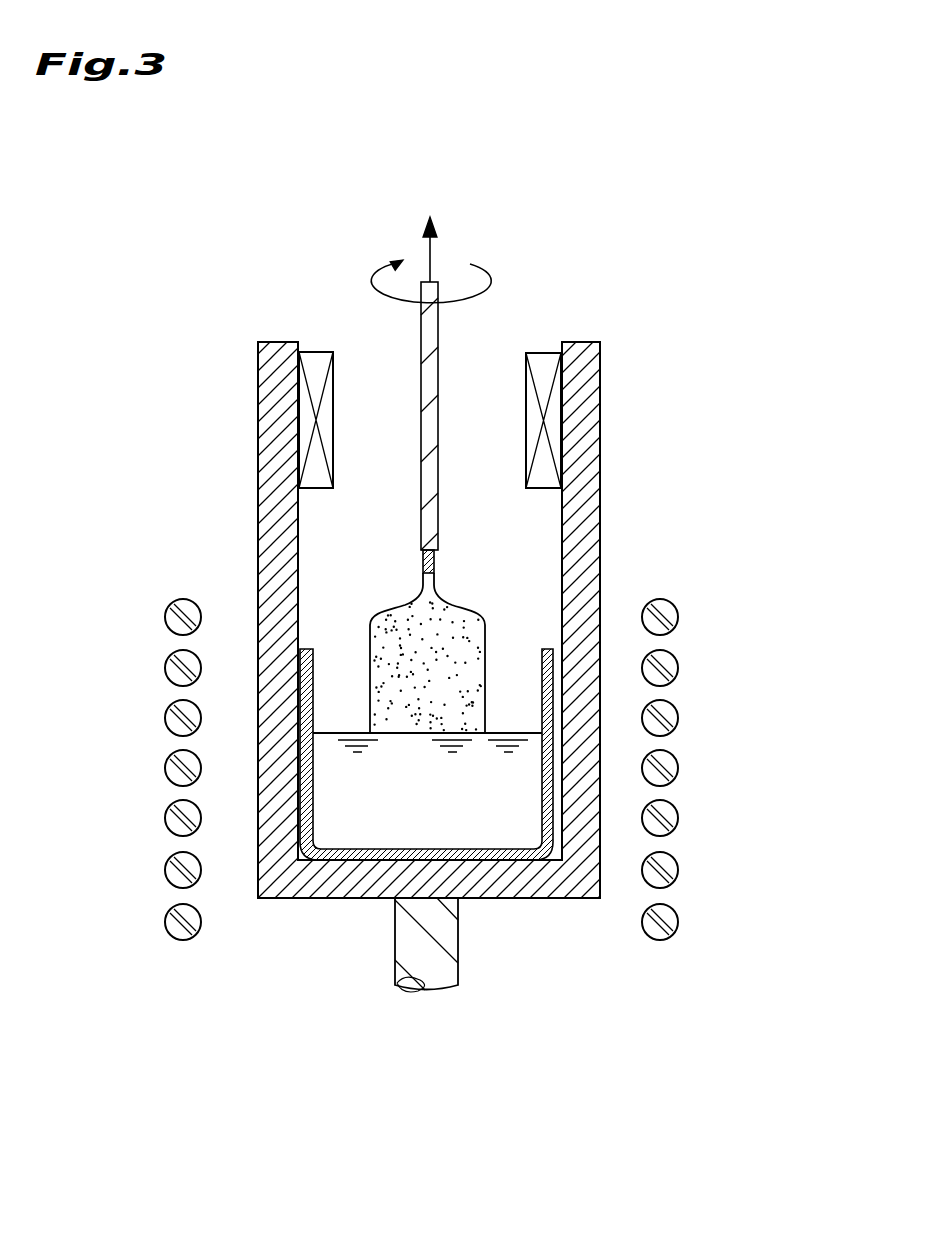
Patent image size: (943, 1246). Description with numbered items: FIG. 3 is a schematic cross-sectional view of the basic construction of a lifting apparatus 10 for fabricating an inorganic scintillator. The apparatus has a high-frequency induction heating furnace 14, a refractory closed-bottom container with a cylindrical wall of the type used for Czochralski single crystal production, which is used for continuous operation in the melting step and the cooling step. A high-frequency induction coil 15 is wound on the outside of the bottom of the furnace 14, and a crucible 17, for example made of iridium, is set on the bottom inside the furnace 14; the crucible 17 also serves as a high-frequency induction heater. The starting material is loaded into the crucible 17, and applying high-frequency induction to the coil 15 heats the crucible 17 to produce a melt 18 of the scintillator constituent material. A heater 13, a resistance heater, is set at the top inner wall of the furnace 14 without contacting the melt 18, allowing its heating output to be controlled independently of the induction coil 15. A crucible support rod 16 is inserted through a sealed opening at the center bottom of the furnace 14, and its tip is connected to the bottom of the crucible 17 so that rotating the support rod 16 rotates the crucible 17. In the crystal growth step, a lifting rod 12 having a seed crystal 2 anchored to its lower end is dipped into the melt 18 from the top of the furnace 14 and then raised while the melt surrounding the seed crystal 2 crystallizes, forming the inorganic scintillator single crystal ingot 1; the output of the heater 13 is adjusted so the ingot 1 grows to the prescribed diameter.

The single crystal ingot 1 is at (383, 627).
The seed crystal 2 is at (425, 567).
The lifting apparatus 10 is at (715, 185).
The lifting rod 12 is at (440, 360).
The heater 13 is at (315, 352).
The high-frequency induction heating furnace 14 is at (597, 470).
The high-frequency induction coil 15 is at (665, 612).
The crucible support rod 16 is at (448, 942).
The crucible 17 is at (337, 857).
The melt 18 is at (502, 818).